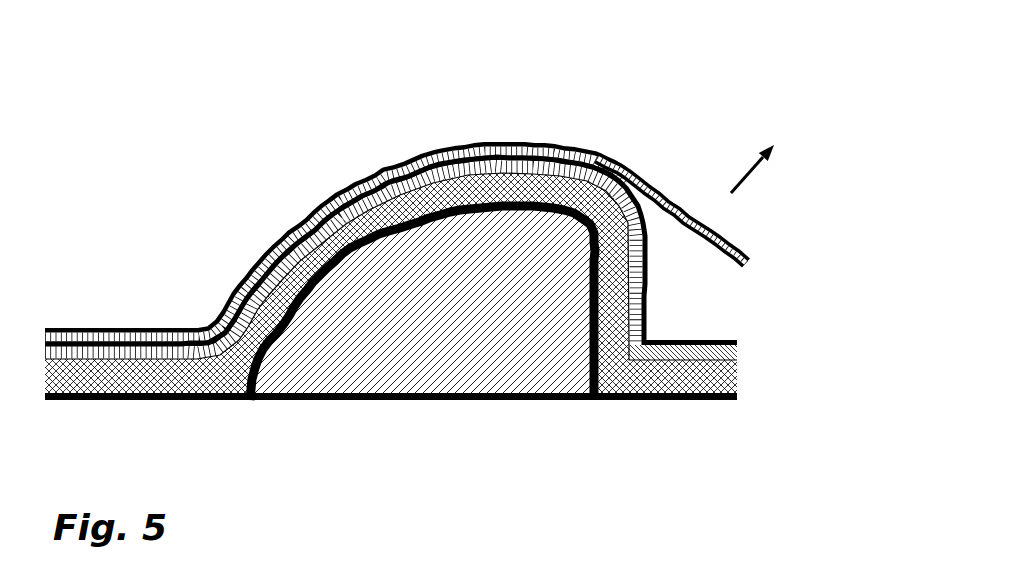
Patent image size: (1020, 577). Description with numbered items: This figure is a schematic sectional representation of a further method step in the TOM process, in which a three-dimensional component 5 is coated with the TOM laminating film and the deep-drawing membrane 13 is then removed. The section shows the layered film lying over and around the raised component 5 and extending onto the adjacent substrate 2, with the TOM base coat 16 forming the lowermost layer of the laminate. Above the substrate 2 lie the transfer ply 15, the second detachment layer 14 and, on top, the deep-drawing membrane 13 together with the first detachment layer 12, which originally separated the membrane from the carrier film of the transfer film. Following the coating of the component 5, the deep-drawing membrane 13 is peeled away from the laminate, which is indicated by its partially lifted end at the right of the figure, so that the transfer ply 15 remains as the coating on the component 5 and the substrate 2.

The substrate 2 is at (727, 378).
The component 5 is at (452, 385).
The first detachment layer 12 is at (395, 206).
The deep-drawing membrane 13 is at (603, 154).
The second detachment layer 14 is at (648, 277).
The transfer ply 15 is at (727, 348).
The TOM base coat 16 is at (737, 397).